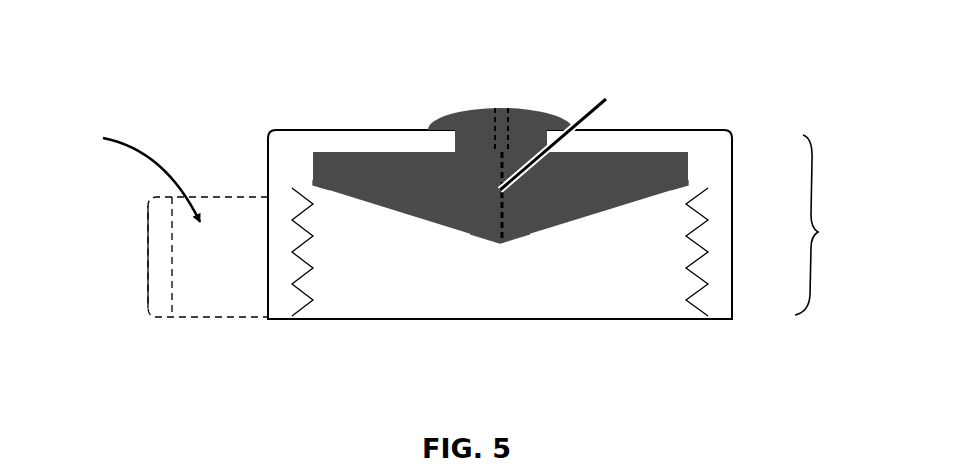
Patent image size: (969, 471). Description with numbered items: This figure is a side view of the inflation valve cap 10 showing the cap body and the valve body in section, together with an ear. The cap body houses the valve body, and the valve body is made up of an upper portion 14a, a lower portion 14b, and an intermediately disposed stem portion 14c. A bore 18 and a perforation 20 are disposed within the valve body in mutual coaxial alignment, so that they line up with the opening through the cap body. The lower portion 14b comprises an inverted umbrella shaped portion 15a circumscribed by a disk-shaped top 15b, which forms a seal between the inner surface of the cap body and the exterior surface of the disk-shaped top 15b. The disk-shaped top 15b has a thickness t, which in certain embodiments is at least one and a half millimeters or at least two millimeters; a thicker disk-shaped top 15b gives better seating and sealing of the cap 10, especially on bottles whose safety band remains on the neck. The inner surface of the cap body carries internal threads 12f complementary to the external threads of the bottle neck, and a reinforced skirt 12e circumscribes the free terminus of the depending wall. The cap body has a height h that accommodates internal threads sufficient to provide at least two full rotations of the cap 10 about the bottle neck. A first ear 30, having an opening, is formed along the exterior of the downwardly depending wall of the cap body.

The inflation valve cap 10 is at (262, 129).
The reinforced skirt 12e is at (716, 306).
The internal threads 12f is at (305, 304).
The upper portion 14a is at (437, 117).
The lower portion 14b is at (447, 145).
The stem portion 14c is at (592, 190).
The inverted umbrella shaped portion 15a is at (478, 252).
The disk-shaped top 15b is at (330, 187).
The bore 18 is at (502, 112).
The perforation 20 is at (564, 135).
The first ear 30 is at (155, 263).
The thickness t is at (683, 158).
The height h is at (816, 225).